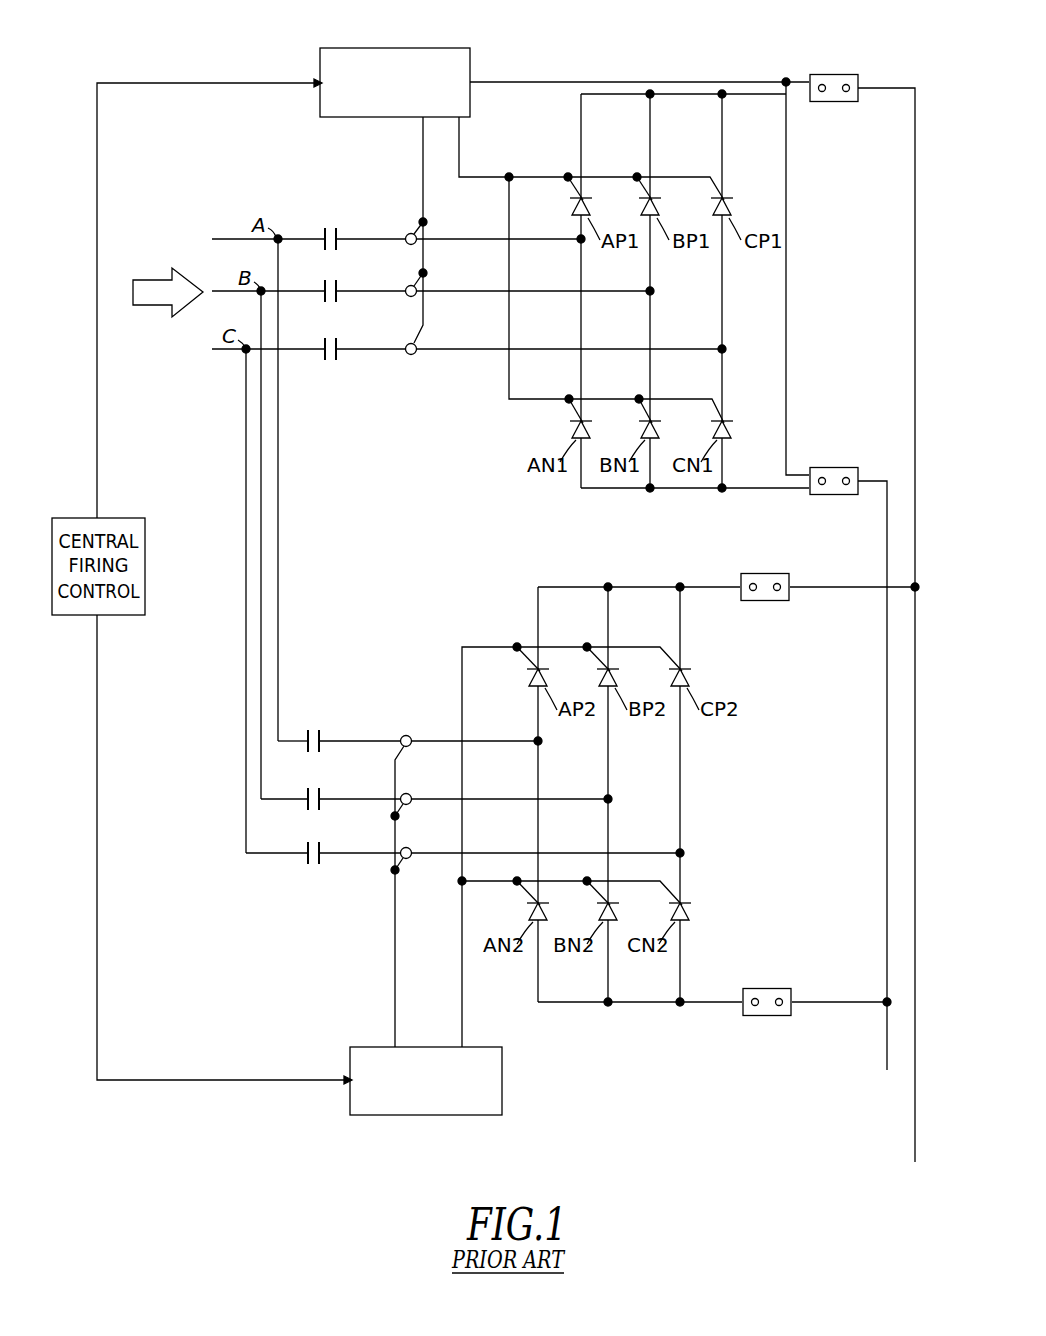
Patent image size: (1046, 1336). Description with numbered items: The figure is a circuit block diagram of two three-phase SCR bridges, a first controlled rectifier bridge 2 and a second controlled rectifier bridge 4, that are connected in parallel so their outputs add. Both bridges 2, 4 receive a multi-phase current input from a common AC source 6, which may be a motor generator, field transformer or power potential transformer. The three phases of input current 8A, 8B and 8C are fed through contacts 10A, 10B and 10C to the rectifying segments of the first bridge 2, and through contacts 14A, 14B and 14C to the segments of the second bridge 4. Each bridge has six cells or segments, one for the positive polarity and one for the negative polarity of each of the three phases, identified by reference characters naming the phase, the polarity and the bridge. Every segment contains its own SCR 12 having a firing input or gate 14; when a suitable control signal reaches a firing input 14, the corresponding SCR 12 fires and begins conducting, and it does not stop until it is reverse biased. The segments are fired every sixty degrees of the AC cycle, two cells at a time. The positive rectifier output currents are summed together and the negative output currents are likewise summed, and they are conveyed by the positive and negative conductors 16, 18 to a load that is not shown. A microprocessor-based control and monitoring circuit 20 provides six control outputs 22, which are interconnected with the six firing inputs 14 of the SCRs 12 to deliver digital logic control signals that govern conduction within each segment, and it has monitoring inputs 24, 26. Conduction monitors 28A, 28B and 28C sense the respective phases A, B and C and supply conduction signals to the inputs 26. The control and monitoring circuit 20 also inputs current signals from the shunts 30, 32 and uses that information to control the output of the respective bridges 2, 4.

The first controlled rectifier bridge 2 is at (862, 274).
The second controlled rectifier bridge 4 is at (777, 819).
The common AC source 6 is at (152, 274).
The phase A input current 8A is at (221, 238).
The phase B input current 8B is at (221, 290).
The phase C input current 8C is at (221, 350).
The phase A contact 10A is at (324, 228).
The phase B contact 10B is at (340, 280).
The phase C contact 10C is at (336, 360).
The SCR 12 is at (586, 208).
The firing input 14 is at (572, 199).
The phase A contact 14A is at (314, 736).
The phase B contact 14B is at (314, 794).
The phase C contact 14C is at (314, 848).
The positive conductor 16 is at (912, 1132).
The negative conductor 18 is at (886, 1046).
The control and monitoring circuit 20 is at (388, 48).
The control outputs 22 is at (462, 122).
The monitoring input 24 is at (476, 80).
The monitoring inputs 26 is at (420, 120).
The phase A conduction monitor 28A is at (406, 230).
The phase B conduction monitor 28B is at (406, 298).
The phase C conduction monitor 28C is at (416, 354).
The shunt 30 is at (826, 75).
The shunt 32 is at (830, 468).